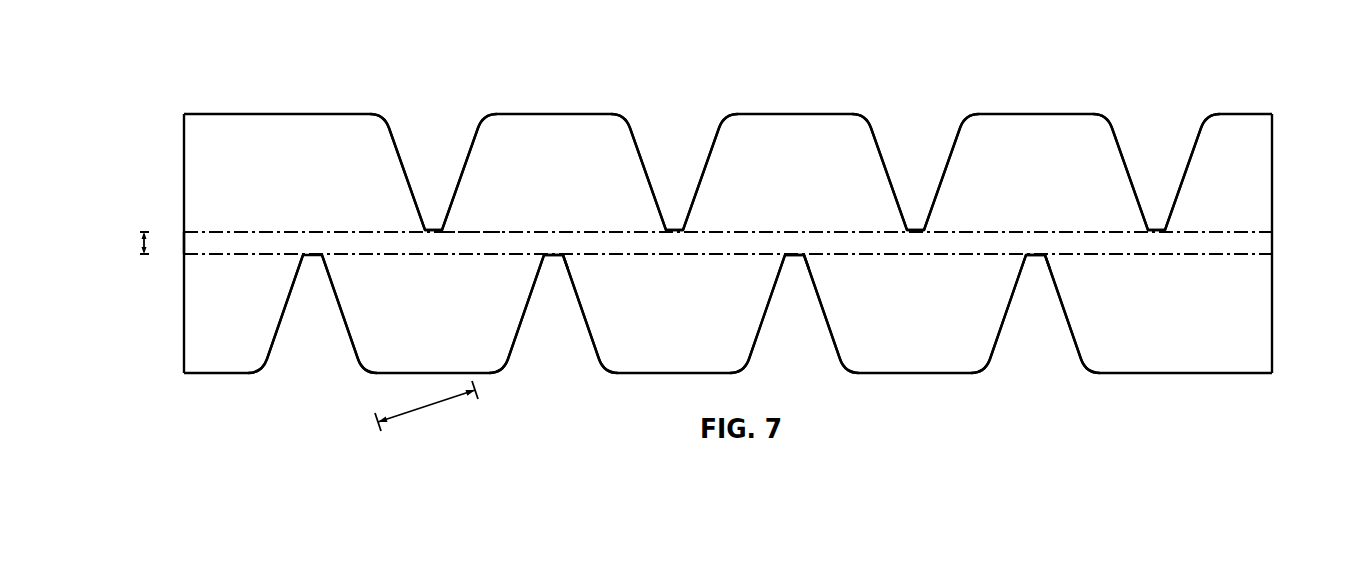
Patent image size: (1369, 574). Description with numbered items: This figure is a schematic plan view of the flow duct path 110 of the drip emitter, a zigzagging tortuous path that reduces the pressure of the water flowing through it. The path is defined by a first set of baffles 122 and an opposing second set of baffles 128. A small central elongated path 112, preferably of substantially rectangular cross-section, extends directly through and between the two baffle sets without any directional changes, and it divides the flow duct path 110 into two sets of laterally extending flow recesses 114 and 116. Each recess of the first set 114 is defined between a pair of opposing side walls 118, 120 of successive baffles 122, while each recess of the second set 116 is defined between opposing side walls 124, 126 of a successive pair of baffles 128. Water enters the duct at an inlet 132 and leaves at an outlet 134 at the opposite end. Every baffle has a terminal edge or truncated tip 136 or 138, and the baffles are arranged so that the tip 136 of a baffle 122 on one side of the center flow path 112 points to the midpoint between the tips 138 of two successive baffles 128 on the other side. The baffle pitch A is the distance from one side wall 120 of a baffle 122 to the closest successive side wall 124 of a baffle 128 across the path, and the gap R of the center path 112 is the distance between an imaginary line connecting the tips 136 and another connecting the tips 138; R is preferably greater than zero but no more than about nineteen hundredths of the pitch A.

The flow duct path 110 is at (154, 45).
The central elongated path 112 is at (468, 247).
The flow recesses 114 is at (264, 158).
The flow recesses 116 is at (239, 358).
The side wall 118 is at (466, 162).
The side wall 120 is at (396, 150).
The first set of baffles 122 is at (453, 158).
The side wall 124 is at (340, 306).
The side wall 126 is at (283, 310).
The second set of baffles 128 is at (334, 345).
The inlet 132 is at (1258, 245).
The outlet 134 is at (213, 242).
The truncated tip 136 is at (437, 229).
The truncated tip 138 is at (563, 256).
The gap of center path R is at (142, 245).
The baffle pitch A is at (423, 408).